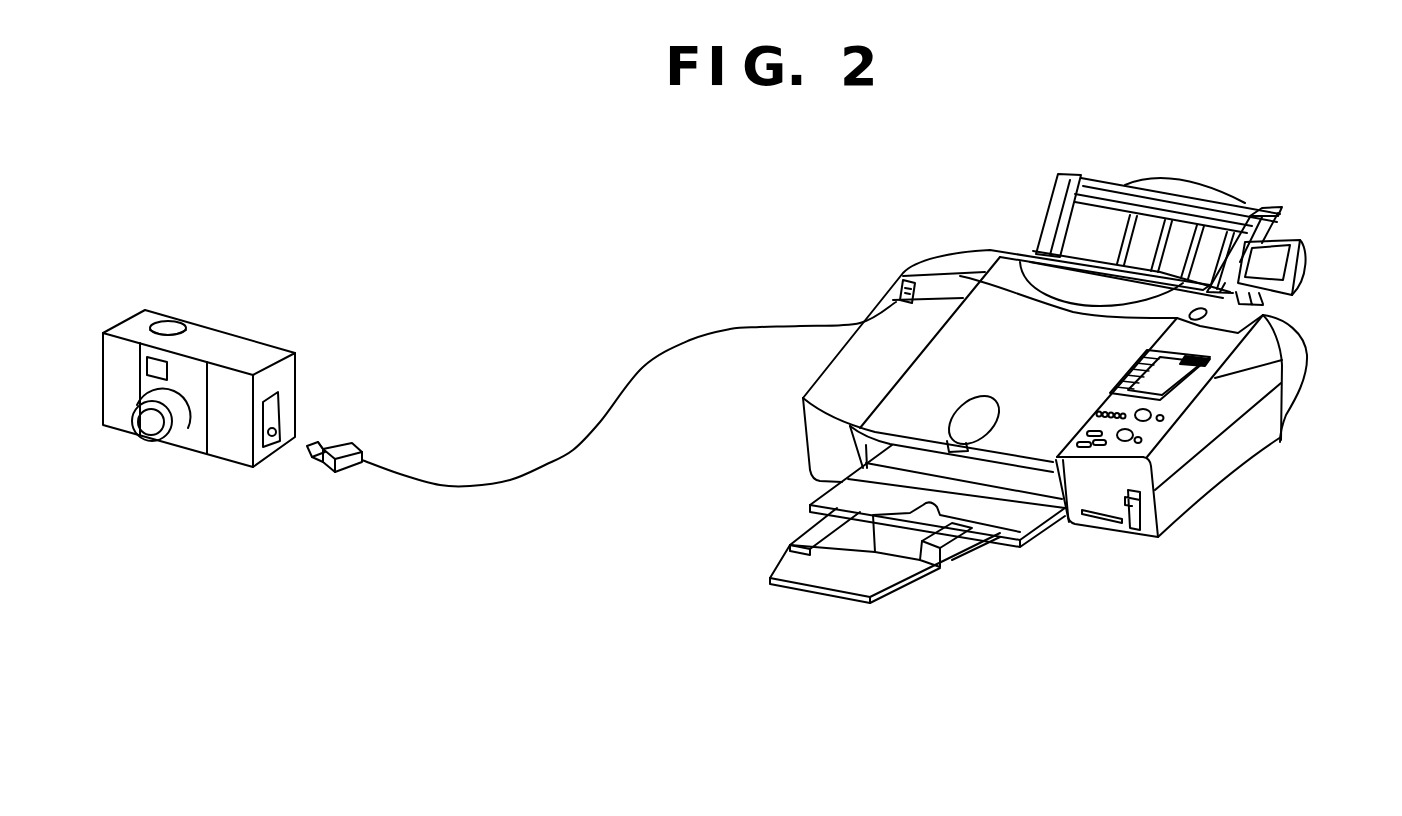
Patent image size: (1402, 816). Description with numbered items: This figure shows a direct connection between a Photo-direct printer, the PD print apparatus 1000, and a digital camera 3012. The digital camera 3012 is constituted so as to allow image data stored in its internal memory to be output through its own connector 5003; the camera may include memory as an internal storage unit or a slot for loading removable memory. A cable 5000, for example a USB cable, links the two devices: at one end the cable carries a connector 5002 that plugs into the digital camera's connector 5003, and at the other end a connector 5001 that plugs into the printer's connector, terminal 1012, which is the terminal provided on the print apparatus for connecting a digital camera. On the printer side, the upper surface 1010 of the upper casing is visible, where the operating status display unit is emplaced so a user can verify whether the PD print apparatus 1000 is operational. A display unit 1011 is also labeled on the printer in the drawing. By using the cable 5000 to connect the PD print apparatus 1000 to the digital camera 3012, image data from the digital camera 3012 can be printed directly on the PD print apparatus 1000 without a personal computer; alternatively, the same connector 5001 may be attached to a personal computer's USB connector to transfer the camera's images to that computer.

The digital camera 3012 is at (212, 343).
The connector 5003 is at (276, 428).
The connector 5002 is at (330, 472).
The cable 5000 is at (587, 433).
The connector 5001 is at (898, 298).
The terminal 1012 is at (917, 272).
The PD print apparatus 1000 is at (1311, 305).
The upper surface 1010 is at (1186, 378).
The display unit 1011 is at (1283, 244).